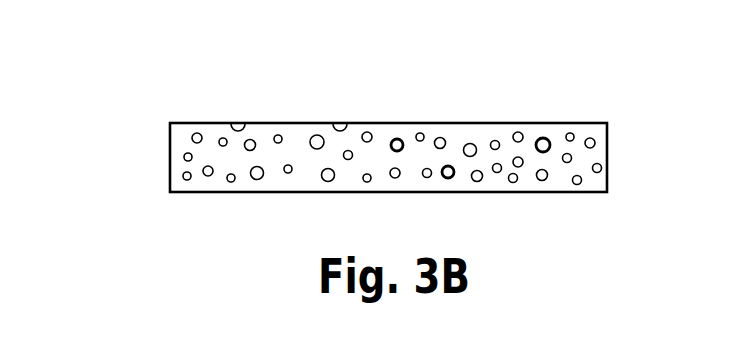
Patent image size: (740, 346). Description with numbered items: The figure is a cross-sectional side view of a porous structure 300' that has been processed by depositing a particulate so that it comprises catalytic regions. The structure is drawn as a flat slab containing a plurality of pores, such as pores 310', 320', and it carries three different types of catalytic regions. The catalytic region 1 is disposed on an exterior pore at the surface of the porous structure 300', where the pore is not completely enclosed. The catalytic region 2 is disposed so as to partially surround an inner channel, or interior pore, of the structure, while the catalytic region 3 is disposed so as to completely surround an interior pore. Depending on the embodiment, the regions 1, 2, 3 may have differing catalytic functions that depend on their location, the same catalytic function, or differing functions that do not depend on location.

The porous structure 300' is at (328, 120).
The catalytic region 1 is at (340, 123).
The catalytic region 2 is at (397, 139).
The catalytic region 3 is at (543, 138).
The pore 310' is at (507, 211).
The pore 320' is at (583, 203).